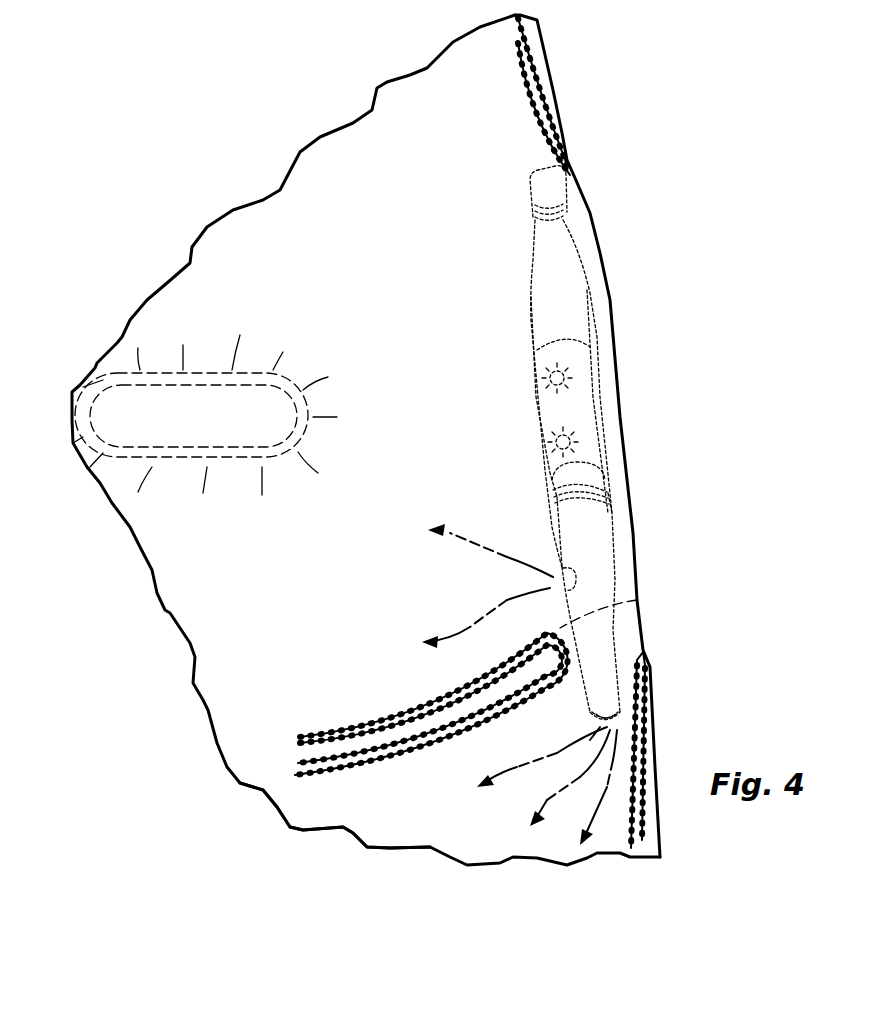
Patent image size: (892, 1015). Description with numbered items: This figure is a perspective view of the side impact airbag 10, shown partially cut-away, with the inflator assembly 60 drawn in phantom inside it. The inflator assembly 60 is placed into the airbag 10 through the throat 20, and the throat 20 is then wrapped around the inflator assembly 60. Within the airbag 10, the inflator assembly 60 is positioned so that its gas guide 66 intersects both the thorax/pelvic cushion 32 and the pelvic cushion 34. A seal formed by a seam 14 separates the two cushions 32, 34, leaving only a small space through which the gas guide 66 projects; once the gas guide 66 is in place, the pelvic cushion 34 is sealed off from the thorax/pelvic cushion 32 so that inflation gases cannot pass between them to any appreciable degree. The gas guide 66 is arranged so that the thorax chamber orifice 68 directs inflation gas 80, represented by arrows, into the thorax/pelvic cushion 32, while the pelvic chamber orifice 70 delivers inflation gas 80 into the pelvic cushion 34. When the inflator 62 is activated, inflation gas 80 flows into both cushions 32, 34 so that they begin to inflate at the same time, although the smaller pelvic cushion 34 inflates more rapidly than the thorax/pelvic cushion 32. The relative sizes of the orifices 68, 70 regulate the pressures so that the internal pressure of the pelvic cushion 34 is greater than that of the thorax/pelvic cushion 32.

The side impact airbag 10 is at (165, 195).
The seam 14 is at (350, 725).
The throat 20 is at (627, 590).
The thorax/pelvic cushion 32 is at (187, 530).
The pelvic cushion 34 is at (357, 800).
The inflator assembly 60 is at (500, 275).
The inflator 62 is at (577, 302).
The gas guide 66 is at (605, 543).
The thorax chamber orifice 68 is at (560, 565).
The pelvic chamber orifice 70 is at (623, 725).
The inflation gas 80 is at (500, 605).